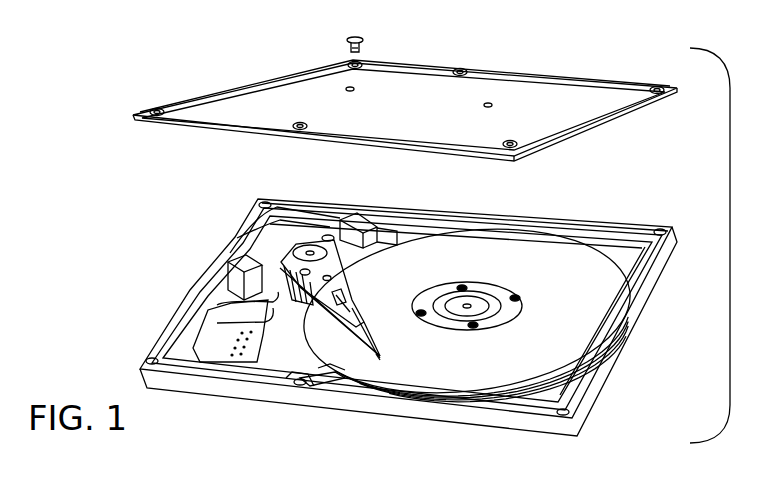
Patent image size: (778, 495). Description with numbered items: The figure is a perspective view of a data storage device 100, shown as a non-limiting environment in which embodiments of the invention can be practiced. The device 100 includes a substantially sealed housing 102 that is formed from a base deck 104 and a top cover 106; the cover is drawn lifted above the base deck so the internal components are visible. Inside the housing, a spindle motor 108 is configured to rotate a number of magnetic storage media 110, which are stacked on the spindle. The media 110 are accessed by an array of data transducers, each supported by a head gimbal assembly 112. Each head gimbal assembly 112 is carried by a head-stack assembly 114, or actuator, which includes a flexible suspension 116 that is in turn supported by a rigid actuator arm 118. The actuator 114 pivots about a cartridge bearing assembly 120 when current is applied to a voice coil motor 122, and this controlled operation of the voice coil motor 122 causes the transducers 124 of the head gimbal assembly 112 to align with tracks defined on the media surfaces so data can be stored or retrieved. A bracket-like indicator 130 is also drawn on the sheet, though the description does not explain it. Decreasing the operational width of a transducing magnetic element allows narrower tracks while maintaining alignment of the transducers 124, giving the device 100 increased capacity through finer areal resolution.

The data storage device 100 is at (150, 58).
The housing 102 is at (173, 207).
The base deck 104 is at (620, 352).
The top cover 106 is at (485, 84).
The spindle motor 108 is at (478, 300).
The magnetic storage media 110 is at (520, 400).
The head gimbal assembly 112 is at (380, 357).
The head-stack assembly 114 is at (355, 282).
The flexible suspension 116 is at (372, 336).
The rigid actuator arm 118 is at (372, 300).
The cartridge bearing assembly 120 is at (352, 204).
The voice coil motor 122 is at (310, 250).
The transducers 124 is at (380, 358).
The controller 130 is at (700, 494).